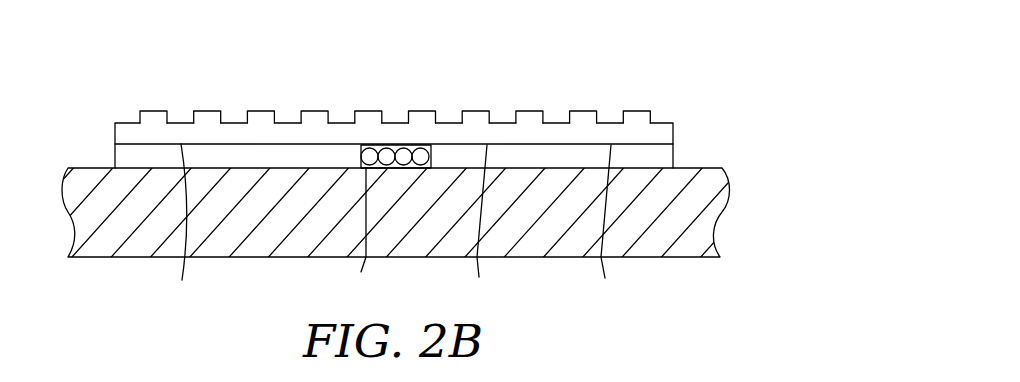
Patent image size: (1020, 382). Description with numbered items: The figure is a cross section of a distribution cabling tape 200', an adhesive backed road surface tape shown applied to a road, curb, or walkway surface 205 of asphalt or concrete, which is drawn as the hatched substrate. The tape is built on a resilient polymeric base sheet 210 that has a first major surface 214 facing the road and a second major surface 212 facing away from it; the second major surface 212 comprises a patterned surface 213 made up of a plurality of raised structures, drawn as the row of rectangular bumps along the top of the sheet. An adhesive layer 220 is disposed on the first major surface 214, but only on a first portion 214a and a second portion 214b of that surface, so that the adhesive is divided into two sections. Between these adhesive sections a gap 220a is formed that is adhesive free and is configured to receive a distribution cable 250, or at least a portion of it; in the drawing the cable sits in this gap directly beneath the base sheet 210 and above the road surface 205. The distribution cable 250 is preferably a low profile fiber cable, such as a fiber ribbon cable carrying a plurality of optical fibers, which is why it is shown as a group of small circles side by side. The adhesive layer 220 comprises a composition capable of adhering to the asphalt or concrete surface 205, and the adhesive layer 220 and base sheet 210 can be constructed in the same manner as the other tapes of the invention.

The distribution cabling tape 200' is at (396, 177).
The road, curb, or walkway surface 205 is at (692, 201).
The resilient polymeric base sheet 210 is at (130, 133).
The second major surface 212 is at (667, 123).
The patterned surface 213 is at (582, 109).
The first major surface 214 is at (603, 225).
The first portion 214a is at (180, 227).
The second portion 214b is at (479, 227).
The adhesive layer 220 is at (665, 157).
The gap 220a is at (365, 236).
The distribution cable 250 is at (387, 150).